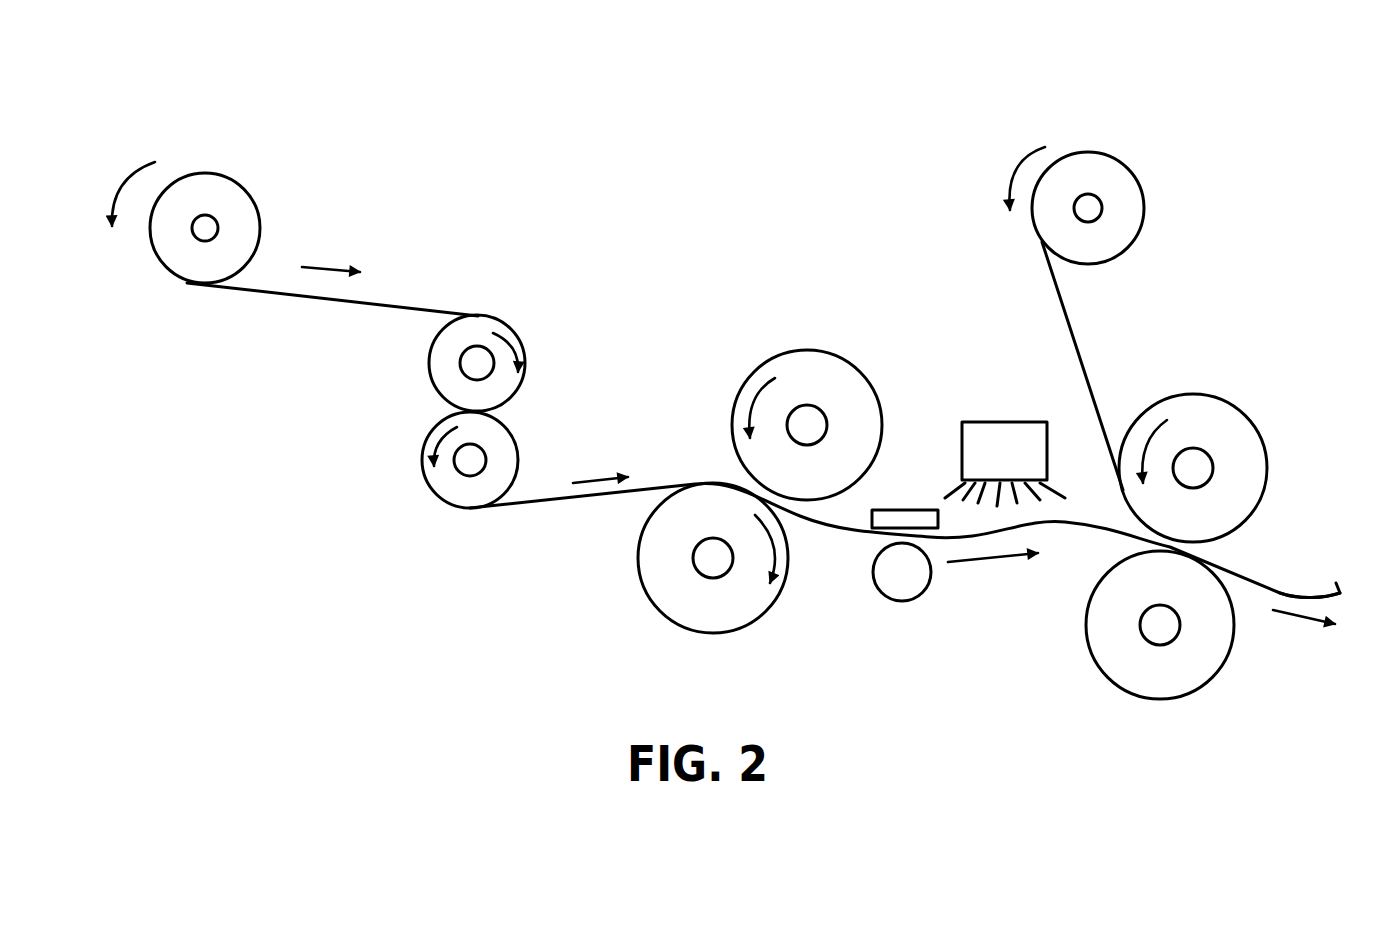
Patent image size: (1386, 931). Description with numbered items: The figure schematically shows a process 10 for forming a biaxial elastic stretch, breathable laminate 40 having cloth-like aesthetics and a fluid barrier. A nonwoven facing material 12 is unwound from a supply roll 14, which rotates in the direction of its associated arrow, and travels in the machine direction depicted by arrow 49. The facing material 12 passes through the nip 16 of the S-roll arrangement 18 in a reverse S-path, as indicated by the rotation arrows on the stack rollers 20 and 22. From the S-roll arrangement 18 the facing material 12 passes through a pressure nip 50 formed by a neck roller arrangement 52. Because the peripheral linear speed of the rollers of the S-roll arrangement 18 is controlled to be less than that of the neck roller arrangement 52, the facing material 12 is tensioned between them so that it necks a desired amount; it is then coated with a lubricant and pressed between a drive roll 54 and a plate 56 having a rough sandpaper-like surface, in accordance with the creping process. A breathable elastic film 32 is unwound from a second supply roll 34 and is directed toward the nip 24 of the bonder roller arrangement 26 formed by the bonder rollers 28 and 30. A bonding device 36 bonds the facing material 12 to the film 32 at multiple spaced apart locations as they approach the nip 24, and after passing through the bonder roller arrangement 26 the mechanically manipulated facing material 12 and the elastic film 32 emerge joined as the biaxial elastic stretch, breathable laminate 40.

The process 10 is at (812, 194).
The nonwoven facing material 12 is at (265, 296).
The supply roll 14 is at (213, 187).
The nip 16 is at (518, 414).
The S-roll arrangement 18 is at (425, 410).
The stack roller 20 is at (443, 363).
The stack roller 22 is at (442, 502).
The nip 24 is at (1105, 546).
The bonder roller arrangement 26 is at (1122, 408).
The bonder roller 28 is at (1247, 440).
The bonder roller 30 is at (1177, 685).
The breathable elastic film 32 is at (1078, 347).
The supply roll 34 is at (1097, 165).
The bonding device 36 is at (1000, 422).
The biaxial elastic stretch, breathable laminate 40 is at (1282, 592).
The arrow 49 is at (983, 563).
The pressure nip 50 is at (698, 464).
The neck roller arrangement 52 is at (716, 405).
The drive roll 54 is at (897, 578).
The plate 56 is at (900, 518).